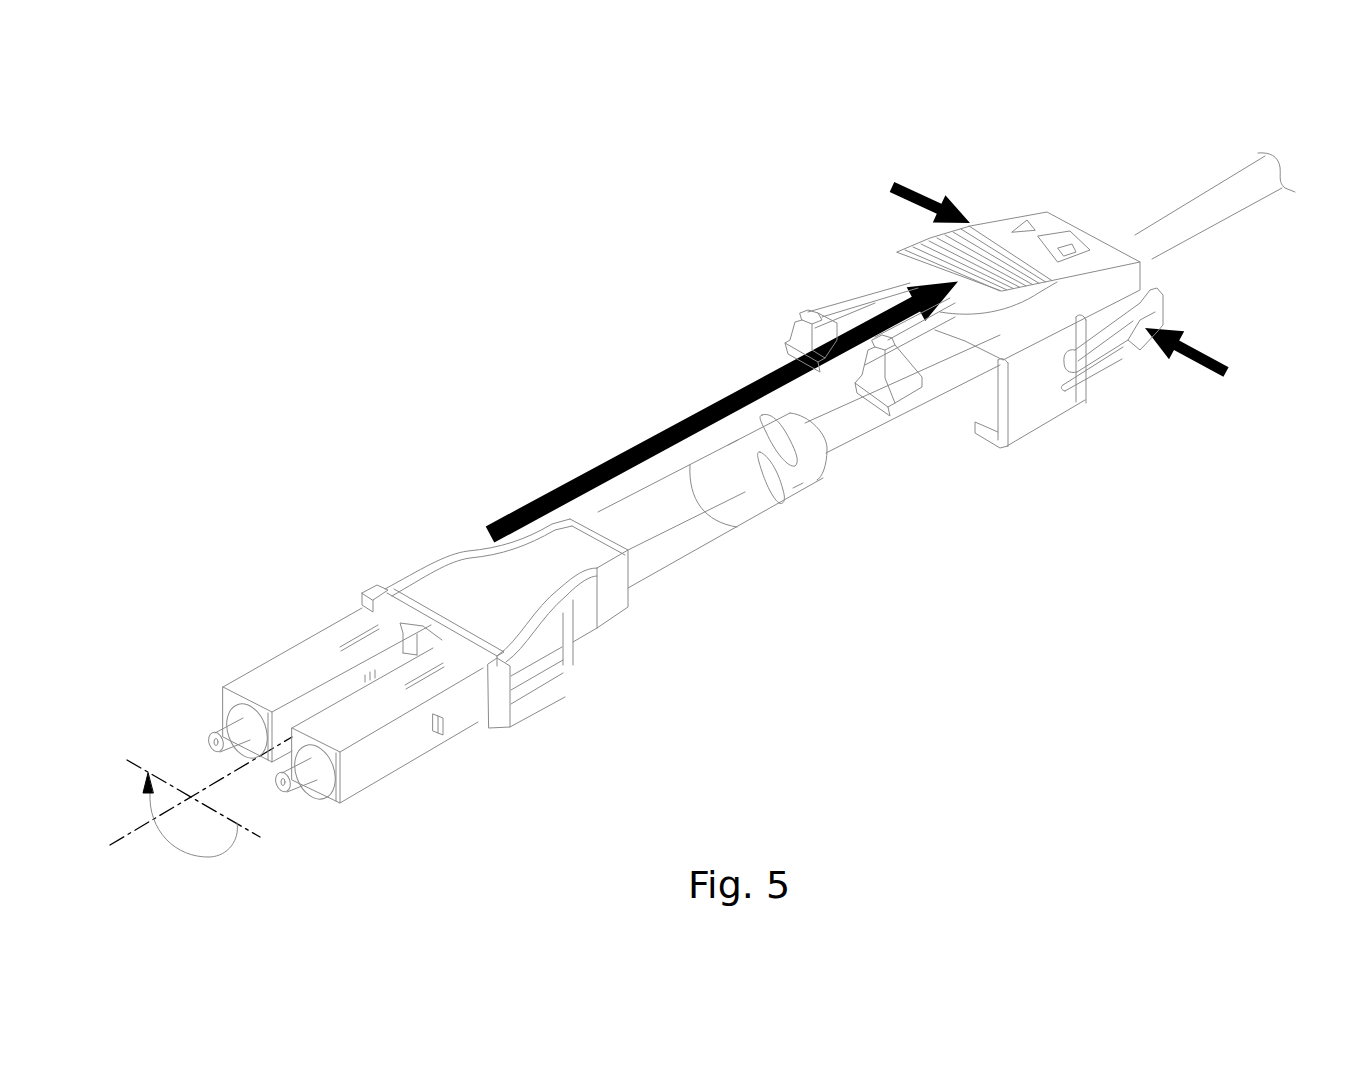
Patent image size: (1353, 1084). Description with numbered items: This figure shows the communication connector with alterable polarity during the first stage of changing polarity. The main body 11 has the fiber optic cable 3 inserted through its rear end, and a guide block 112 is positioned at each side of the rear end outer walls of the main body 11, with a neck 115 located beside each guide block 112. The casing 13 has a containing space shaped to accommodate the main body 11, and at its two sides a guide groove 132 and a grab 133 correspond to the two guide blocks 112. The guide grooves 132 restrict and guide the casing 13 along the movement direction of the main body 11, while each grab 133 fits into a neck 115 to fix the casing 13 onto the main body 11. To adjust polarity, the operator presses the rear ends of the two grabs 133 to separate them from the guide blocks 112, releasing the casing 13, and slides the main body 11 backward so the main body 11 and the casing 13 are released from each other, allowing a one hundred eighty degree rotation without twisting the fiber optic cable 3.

The fiber optic cable 3 is at (1157, 237).
The main body 11 is at (432, 588).
The guide block 112 is at (535, 672).
The neck 115 is at (577, 642).
The casing 13 is at (1034, 407).
The guide groove 132 is at (988, 409).
The grab 133 is at (1103, 342).